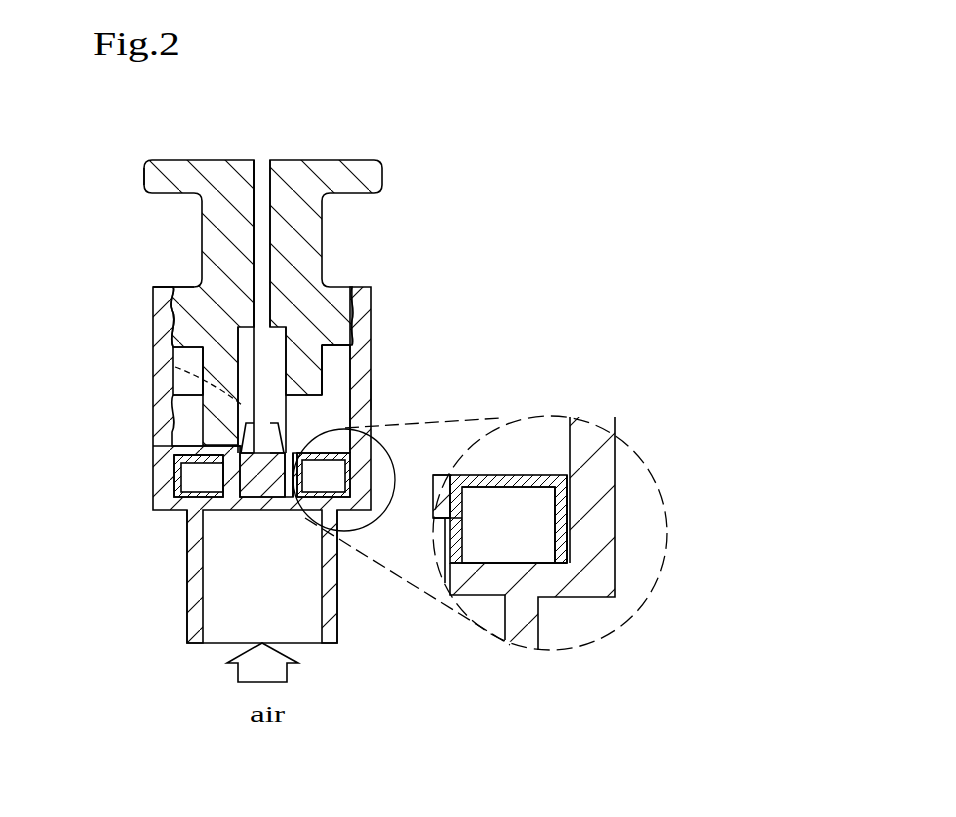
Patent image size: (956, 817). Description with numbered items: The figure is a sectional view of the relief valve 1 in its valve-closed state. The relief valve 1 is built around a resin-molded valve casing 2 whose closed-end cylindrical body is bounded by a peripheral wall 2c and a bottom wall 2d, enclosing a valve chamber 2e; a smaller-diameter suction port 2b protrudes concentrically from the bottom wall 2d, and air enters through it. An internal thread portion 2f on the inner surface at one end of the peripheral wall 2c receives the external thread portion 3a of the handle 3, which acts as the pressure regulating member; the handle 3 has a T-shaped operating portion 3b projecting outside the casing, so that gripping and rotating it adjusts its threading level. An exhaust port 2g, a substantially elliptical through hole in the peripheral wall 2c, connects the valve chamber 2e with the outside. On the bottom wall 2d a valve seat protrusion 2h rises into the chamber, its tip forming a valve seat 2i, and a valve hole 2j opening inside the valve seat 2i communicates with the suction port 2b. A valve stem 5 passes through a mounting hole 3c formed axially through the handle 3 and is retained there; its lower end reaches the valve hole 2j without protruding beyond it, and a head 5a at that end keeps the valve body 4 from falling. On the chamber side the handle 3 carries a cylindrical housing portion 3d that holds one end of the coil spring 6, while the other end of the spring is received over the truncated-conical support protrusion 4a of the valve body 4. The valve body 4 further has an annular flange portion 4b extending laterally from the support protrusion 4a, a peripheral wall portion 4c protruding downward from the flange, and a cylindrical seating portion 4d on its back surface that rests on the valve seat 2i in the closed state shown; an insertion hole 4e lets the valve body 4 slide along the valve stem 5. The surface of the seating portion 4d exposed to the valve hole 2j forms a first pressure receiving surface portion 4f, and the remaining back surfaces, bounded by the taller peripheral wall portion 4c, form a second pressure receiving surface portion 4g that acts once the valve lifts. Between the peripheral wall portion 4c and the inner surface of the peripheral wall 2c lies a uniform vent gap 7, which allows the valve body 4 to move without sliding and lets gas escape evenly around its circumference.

The relief valve 1 is at (434, 166).
The valve casing 2 is at (372, 315).
The suction port 2b is at (187, 612).
The peripheral wall 2c is at (372, 395).
The bottom wall 2d is at (478, 600).
The valve chamber 2e is at (335, 358).
The internal thread portion 2f is at (183, 290).
The exhaust port 2g is at (167, 414).
The valve seat protrusion 2h is at (180, 468).
The valve seat 2i is at (452, 510).
The valve hole 2j is at (290, 493).
The handle 3 is at (338, 160).
The external thread portion 3a is at (370, 288).
The operating portion 3b is at (148, 178).
The mounting hole 3c is at (255, 172).
The housing portion 3d is at (175, 363).
The valve body 4 is at (228, 477).
The support protrusion 4a is at (243, 433).
The flange portion 4b is at (497, 475).
The peripheral wall portion 4c is at (570, 525).
The seating portion 4d is at (182, 471).
The insertion hole 4e is at (241, 450).
The first pressure receiving surface portion 4f is at (292, 497).
The second pressure receiving surface portion 4g is at (530, 487).
The valve stem 5 is at (270, 228).
The head 5a is at (258, 497).
The coil spring 6 is at (175, 367).
The vent gap 7 is at (568, 515).